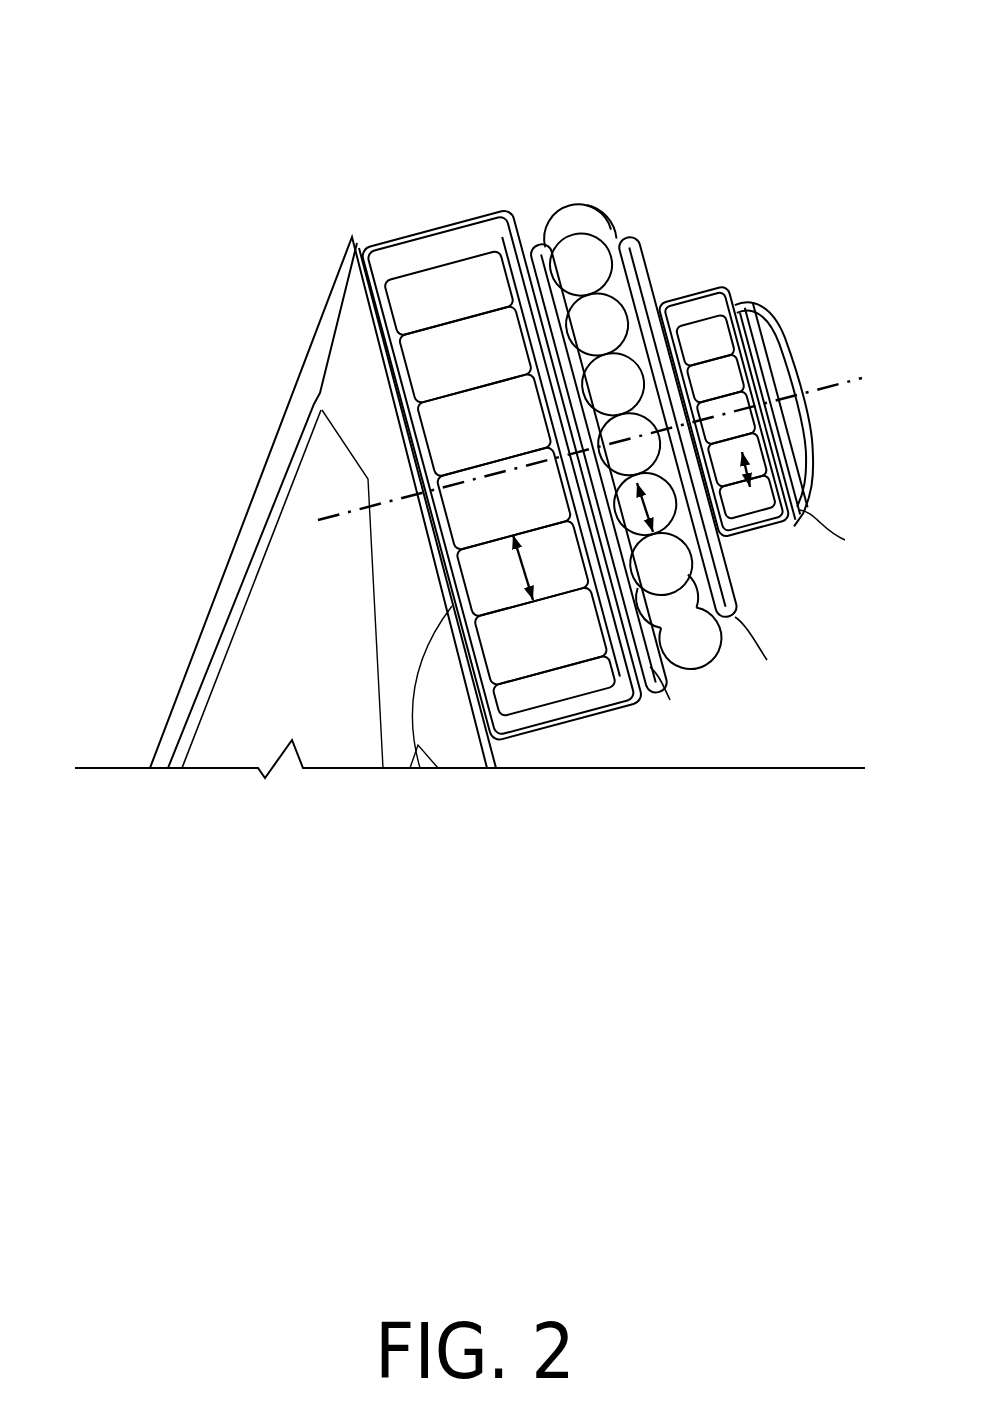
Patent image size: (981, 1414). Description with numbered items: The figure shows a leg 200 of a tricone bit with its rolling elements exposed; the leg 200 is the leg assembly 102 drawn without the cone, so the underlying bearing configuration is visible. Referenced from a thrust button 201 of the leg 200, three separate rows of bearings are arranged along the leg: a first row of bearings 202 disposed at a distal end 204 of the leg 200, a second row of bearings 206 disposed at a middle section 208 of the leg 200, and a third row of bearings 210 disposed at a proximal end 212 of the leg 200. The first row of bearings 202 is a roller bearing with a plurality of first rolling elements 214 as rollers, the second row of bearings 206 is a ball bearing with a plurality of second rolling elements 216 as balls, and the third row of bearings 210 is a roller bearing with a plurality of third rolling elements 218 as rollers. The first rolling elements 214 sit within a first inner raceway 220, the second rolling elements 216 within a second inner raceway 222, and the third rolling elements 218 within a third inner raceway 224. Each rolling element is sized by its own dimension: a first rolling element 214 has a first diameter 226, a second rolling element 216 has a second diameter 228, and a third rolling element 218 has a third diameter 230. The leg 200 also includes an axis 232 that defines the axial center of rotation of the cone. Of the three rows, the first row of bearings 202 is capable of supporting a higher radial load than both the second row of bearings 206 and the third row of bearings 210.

The leg 200 is at (128, 40).
The leg assembly 102 is at (353, 355).
The thrust button 201 is at (773, 328).
The first row of bearings 202 is at (415, 305).
The distal end 204 is at (585, 745).
The second row of bearings 206 is at (577, 276).
The middle section 208 is at (708, 671).
The third row of bearings 210 is at (720, 347).
The proximal end 212 is at (762, 543).
The first rolling elements 214 is at (478, 366).
The second rolling elements 216 is at (626, 388).
The third rolling elements 218 is at (740, 396).
The first inner raceway 220 is at (672, 700).
The second inner raceway 222 is at (761, 656).
The third inner raceway 224 is at (833, 542).
The first diameter 226 is at (513, 570).
The second diameter 228 is at (657, 508).
The third diameter 230 is at (747, 463).
The axis 232 is at (599, 433).